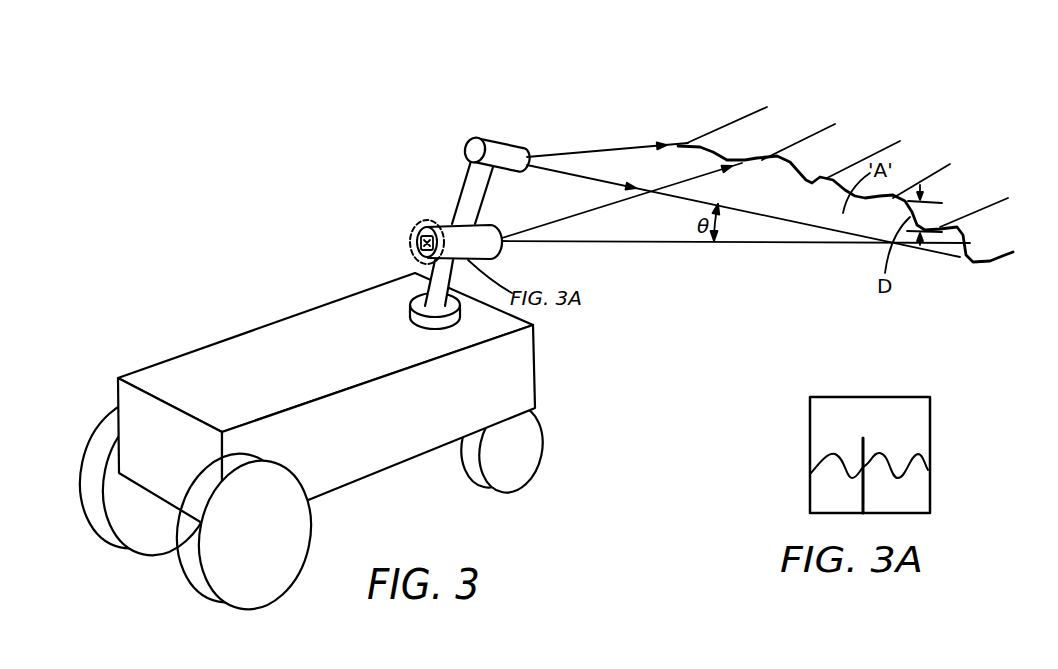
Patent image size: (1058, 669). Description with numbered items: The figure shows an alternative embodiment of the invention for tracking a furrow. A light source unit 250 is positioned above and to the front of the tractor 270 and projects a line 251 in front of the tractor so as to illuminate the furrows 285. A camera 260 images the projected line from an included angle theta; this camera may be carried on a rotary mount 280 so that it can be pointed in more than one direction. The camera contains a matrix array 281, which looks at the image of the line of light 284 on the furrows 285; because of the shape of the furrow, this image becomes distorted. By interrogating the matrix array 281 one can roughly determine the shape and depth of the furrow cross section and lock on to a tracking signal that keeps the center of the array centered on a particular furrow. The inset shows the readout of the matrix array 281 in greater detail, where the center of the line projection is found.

In FIG. 3, the light source unit 250 is at (488, 140).
In FIG. 3, the line 251 is at (600, 177).
In FIG. 3, the camera 260 is at (449, 225).
In FIG. 3, the tractor 270 is at (404, 439).
In FIG. 3, the rotary mount 280 is at (412, 310).
In FIG. 3, the matrix array 281 is at (414, 223).
In FIG. 3A, the matrix array 281 is at (857, 396).
In FIG. 3, the image of the line of light 284 is at (418, 246).
In FIG. 3A, the image of the line of light 284 is at (928, 458).
In FIG. 3, the furrows 285 is at (815, 153).